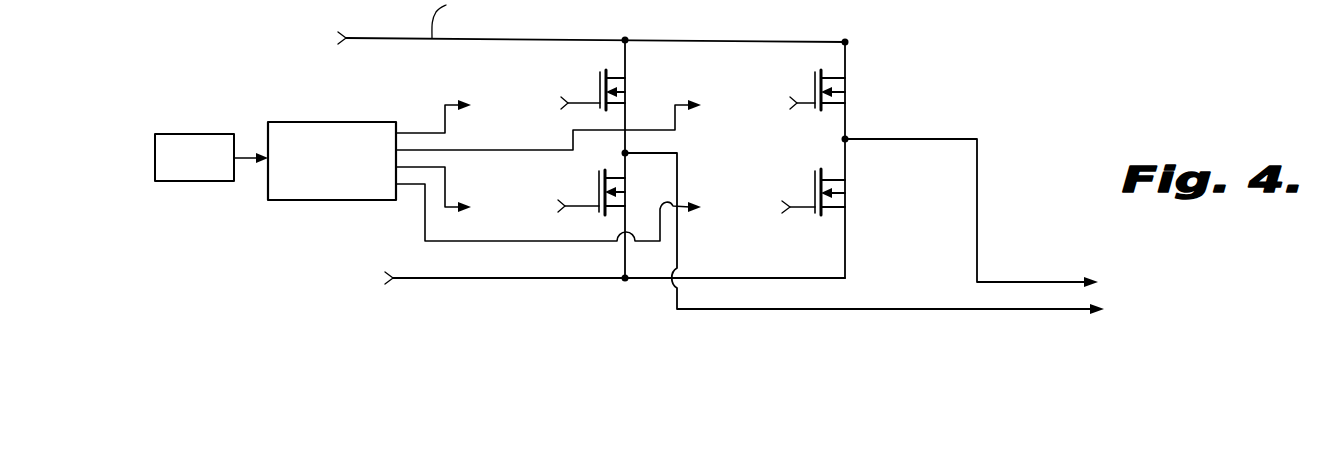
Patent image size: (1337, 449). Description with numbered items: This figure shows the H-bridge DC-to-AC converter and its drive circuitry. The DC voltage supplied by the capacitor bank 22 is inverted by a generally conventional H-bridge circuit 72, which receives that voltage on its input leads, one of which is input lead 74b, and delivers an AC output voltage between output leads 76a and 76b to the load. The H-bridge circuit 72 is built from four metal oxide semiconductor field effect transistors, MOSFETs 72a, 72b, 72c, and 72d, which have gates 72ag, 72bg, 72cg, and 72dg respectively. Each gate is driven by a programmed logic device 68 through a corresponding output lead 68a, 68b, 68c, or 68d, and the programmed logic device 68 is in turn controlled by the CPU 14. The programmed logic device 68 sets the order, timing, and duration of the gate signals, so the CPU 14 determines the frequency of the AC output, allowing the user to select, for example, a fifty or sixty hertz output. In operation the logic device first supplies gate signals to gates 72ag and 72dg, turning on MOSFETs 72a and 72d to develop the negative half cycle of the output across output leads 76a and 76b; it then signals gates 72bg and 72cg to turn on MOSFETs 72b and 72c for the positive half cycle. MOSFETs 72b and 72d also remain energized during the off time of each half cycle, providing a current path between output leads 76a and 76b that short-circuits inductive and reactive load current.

The CPU 14 is at (175, 134).
The capacitor bank 22 is at (279, 168).
The programmed logic device 68 is at (327, 122).
The output lead 68a is at (447, 124).
The output lead 68b is at (516, 152).
The output lead 68c is at (452, 186).
The output lead 68d is at (466, 244).
The H-bridge circuit 72 is at (926, 47).
The MOSFET 72a is at (630, 81).
The gate 72ag is at (598, 83).
The MOSFET 72b is at (628, 188).
The gate 72bg is at (598, 186).
The MOSFET 72c is at (852, 88).
The gate 72cg is at (814, 84).
The MOSFET 72d is at (848, 188).
The gate 72dg is at (813, 190).
The input lead 74b is at (491, 280).
The output lead 76a is at (977, 221).
The output lead 76b is at (1026, 311).